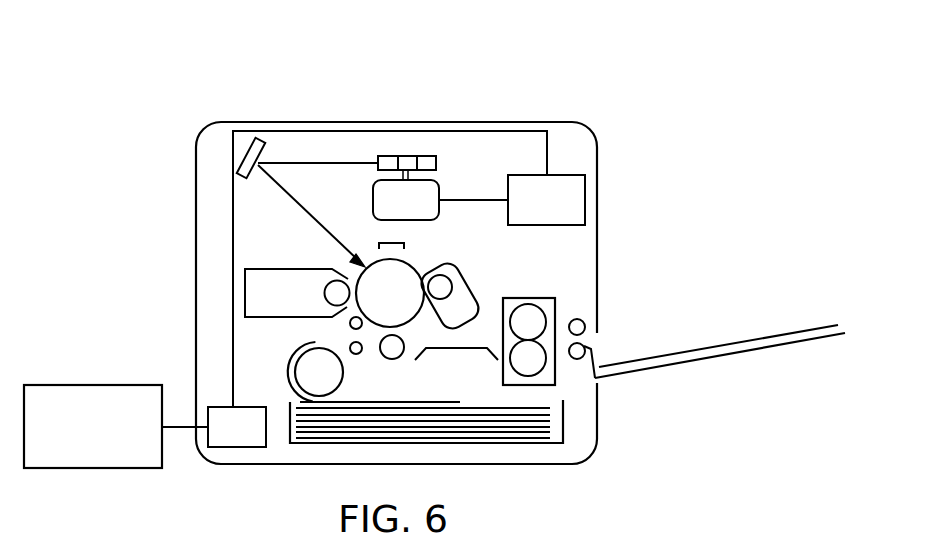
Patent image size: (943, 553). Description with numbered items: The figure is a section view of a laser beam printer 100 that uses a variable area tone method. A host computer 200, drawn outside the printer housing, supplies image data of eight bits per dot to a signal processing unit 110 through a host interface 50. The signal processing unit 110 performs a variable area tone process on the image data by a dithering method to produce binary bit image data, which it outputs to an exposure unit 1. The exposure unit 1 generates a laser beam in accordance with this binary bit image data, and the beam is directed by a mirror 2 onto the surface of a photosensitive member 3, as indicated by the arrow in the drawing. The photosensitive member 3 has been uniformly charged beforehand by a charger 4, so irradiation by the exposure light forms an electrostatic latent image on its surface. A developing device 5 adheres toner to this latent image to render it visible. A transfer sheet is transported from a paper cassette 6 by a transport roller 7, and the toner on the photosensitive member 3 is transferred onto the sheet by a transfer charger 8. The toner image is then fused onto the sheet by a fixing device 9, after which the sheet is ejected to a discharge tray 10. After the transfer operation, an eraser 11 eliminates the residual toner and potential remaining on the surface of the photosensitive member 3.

The exposure unit 1 is at (440, 184).
The mirror 2 is at (252, 178).
The photosensitive member 3 is at (415, 262).
The charger 4 is at (382, 242).
The developing device 5 is at (293, 268).
The paper cassette 6 is at (288, 425).
The transport roller 7 is at (337, 365).
The transfer charger 8 is at (396, 357).
The fixing device 9 is at (527, 297).
The discharge tray 10 is at (680, 352).
The eraser 11 is at (457, 273).
The host interface 50 is at (243, 398).
The laser beam printer 100 is at (587, 115).
The signal processing unit 110 is at (553, 226).
The host computer 200 is at (95, 385).